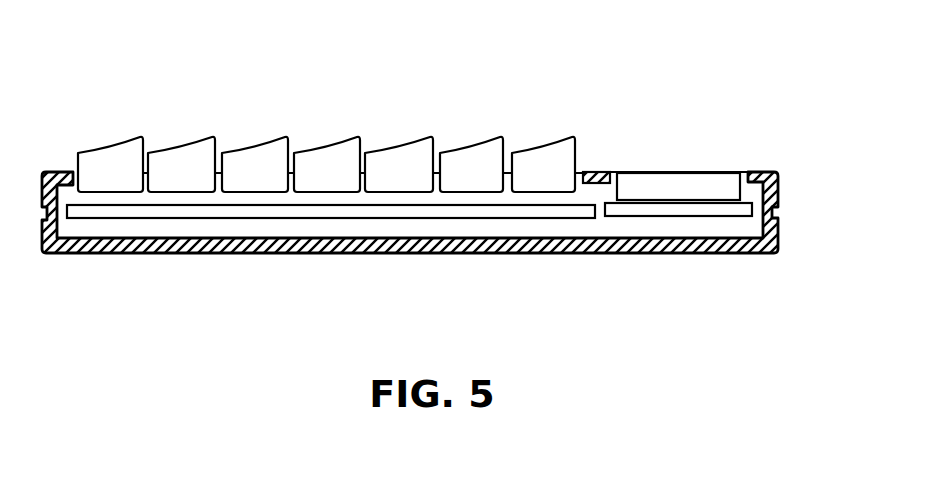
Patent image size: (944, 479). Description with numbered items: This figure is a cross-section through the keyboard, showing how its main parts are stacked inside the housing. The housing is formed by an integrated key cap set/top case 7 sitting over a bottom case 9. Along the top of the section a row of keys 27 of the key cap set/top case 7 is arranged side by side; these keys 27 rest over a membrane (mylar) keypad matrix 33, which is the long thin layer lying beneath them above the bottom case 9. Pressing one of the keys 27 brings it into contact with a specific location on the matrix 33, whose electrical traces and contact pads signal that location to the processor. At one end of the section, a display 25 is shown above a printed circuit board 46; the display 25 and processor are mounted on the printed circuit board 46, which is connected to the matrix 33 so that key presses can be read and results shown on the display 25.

The integrated key cap set/top case 7 is at (780, 195).
The bottom case 9 is at (520, 254).
The display 25 is at (680, 172).
The keys 27 is at (187, 148).
The membrane keypad matrix 33 is at (343, 212).
The printed circuit board 46 is at (655, 208).